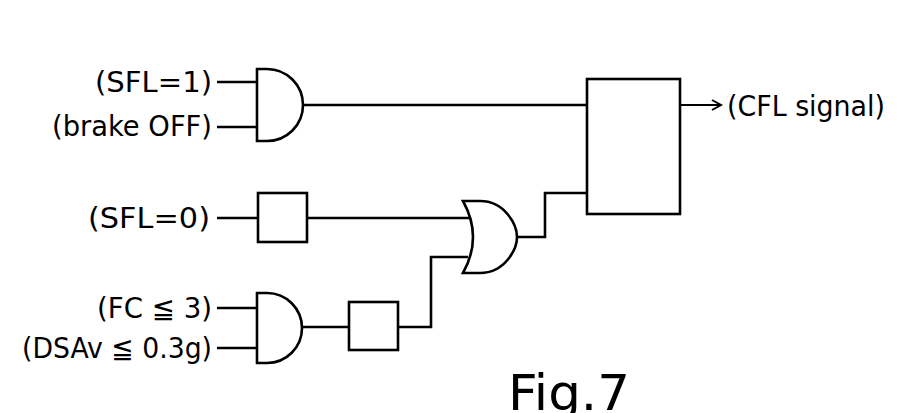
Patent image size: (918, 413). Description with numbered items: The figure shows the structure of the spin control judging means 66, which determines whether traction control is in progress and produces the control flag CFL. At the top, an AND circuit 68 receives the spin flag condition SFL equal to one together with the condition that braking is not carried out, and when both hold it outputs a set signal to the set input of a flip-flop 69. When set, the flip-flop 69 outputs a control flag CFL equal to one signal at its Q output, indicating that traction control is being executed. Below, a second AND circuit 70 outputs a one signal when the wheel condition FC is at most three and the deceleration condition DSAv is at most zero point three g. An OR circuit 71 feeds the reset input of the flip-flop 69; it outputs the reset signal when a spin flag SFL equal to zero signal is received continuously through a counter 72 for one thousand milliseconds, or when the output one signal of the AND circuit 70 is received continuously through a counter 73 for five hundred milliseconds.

The spin control judging means 66 is at (503, 52).
The AND circuit 68 is at (293, 80).
The flip-flop 69 is at (650, 79).
The AND circuit 70 is at (291, 298).
The OR circuit 71 is at (495, 204).
The counter 72 is at (307, 195).
The counter 73 is at (382, 302).